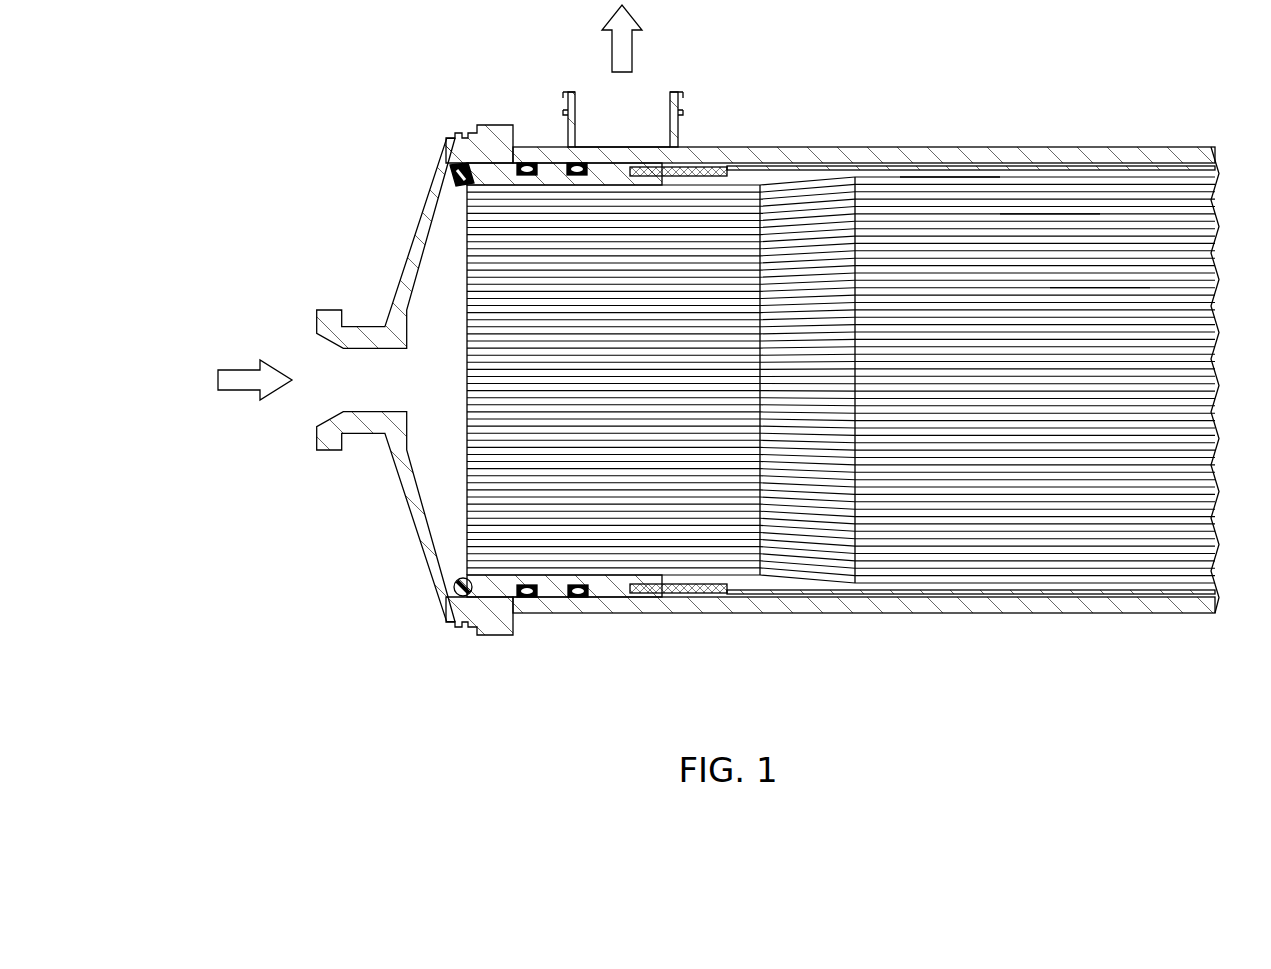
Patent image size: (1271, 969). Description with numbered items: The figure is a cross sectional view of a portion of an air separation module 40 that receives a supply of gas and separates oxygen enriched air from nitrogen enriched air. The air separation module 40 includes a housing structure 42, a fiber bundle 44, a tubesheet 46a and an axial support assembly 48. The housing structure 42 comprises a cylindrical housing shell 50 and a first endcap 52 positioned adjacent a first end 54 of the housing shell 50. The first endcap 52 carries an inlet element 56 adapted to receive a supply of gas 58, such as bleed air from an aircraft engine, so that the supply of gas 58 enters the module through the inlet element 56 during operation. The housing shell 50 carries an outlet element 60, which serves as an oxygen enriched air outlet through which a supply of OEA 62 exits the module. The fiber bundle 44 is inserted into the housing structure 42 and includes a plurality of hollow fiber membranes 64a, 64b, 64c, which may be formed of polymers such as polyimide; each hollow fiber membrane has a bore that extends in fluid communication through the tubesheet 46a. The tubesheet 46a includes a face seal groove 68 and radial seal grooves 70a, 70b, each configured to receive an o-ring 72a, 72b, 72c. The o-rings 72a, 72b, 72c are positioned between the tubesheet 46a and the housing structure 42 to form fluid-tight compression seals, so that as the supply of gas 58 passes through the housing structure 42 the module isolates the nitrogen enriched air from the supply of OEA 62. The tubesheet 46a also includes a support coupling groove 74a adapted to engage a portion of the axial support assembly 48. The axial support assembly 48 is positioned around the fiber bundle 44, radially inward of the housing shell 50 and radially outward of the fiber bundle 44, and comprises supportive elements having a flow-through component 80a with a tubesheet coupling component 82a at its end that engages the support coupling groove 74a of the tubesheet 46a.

The air separation module 40 is at (735, 325).
The housing structure 42 is at (864, 104).
The fiber bundle 44 is at (841, 416).
The tubesheet 46a is at (566, 630).
The axial support assembly 48 is at (688, 638).
The housing shell 50 is at (864, 650).
The first endcap 52 is at (386, 532).
The first end 54 is at (509, 647).
The inlet element 56 is at (386, 243).
The supply of gas 58 is at (245, 366).
The outlet element 60 is at (613, 77).
The supply of OEA 62 is at (644, 40).
The hollow fiber membrane 64a is at (943, 178).
The hollow fiber membrane 64b is at (1030, 215).
The hollow fiber membrane 64c is at (1088, 290).
The face seal groove 68 is at (462, 175).
The radial seal groove 70a is at (499, 96).
The radial seal groove 70b is at (582, 170).
The o-ring 72a is at (409, 368).
The o-ring 72b is at (487, 336).
The o-ring 72c is at (547, 332).
The support coupling groove 74a is at (653, 176).
The flow-through component 80a is at (797, 172).
The tubesheet coupling component 82a is at (714, 176).